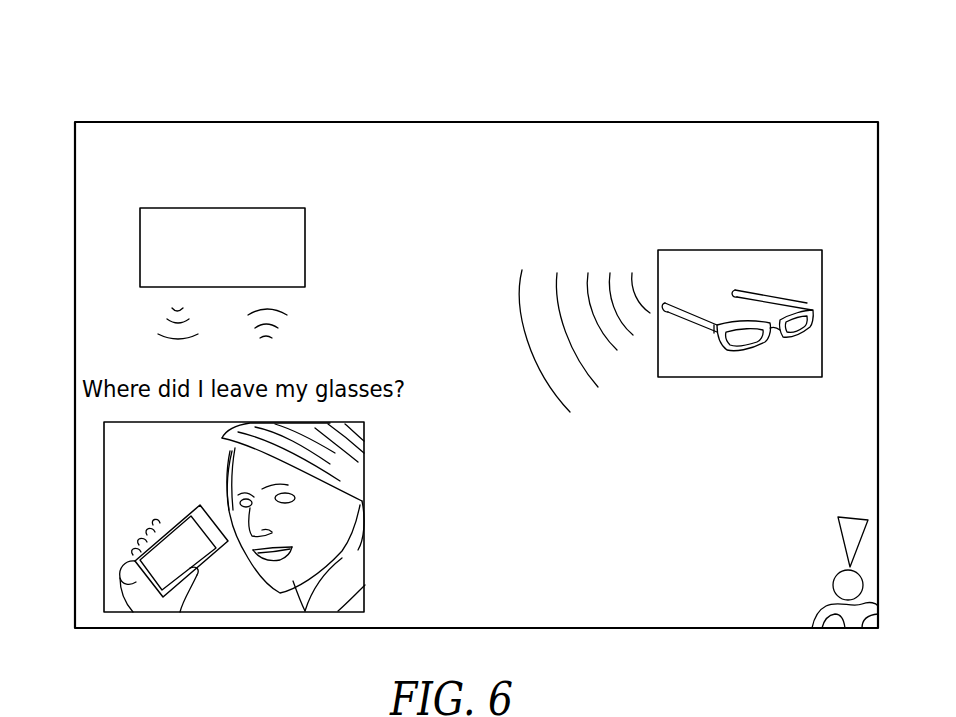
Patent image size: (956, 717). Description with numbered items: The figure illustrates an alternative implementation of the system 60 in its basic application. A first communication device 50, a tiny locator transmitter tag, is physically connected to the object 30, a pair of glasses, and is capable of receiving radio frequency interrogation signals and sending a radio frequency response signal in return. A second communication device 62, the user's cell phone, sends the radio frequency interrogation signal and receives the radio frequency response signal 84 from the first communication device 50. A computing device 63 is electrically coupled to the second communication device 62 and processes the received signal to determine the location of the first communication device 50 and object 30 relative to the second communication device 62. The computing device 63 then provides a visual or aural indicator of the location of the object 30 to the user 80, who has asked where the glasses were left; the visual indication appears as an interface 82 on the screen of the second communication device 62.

The system 60 is at (480, 75).
The computing device 63 is at (187, 207).
The first communication device 50 is at (823, 273).
The object 30 is at (828, 310).
The radio frequency response signal 84 is at (583, 368).
The user 80 is at (207, 438).
The second communication device 62 is at (190, 500).
The interface 82 is at (185, 530).